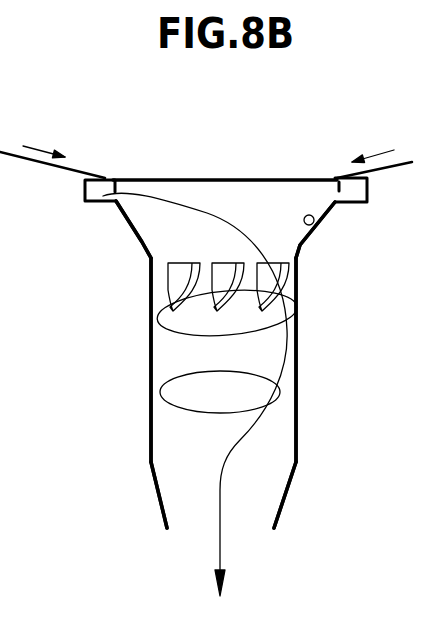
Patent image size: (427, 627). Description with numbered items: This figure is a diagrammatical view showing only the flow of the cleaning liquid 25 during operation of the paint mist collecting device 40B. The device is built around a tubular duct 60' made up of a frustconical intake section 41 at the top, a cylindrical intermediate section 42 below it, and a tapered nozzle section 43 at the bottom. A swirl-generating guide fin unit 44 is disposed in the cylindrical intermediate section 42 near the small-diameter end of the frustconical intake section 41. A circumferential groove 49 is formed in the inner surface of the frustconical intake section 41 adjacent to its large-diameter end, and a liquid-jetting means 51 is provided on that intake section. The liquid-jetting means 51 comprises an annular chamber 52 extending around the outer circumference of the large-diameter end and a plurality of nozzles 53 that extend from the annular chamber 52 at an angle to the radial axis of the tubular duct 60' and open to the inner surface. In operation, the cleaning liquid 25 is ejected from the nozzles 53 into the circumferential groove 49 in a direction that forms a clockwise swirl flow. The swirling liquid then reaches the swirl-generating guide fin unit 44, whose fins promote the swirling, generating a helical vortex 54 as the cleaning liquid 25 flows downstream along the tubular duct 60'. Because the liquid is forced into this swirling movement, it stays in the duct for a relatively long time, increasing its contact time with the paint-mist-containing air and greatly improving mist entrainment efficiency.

The cleaning liquid 25 is at (33, 146).
The paint mist collecting device 40B is at (127, 415).
The frustconical intake section 41 is at (145, 252).
The cylindrical intermediate section 42 is at (150, 385).
The tapered nozzle section 43 is at (160, 505).
The swirl-generating guide fin unit 44 is at (165, 277).
The circumferential groove 49 is at (305, 232).
The liquid-jetting means 51 is at (103, 176).
The annular chamber 52 is at (357, 190).
The nozzles 53 is at (113, 195).
The helical vortex 54 is at (297, 383).
The tubular duct 60' is at (343, 360).